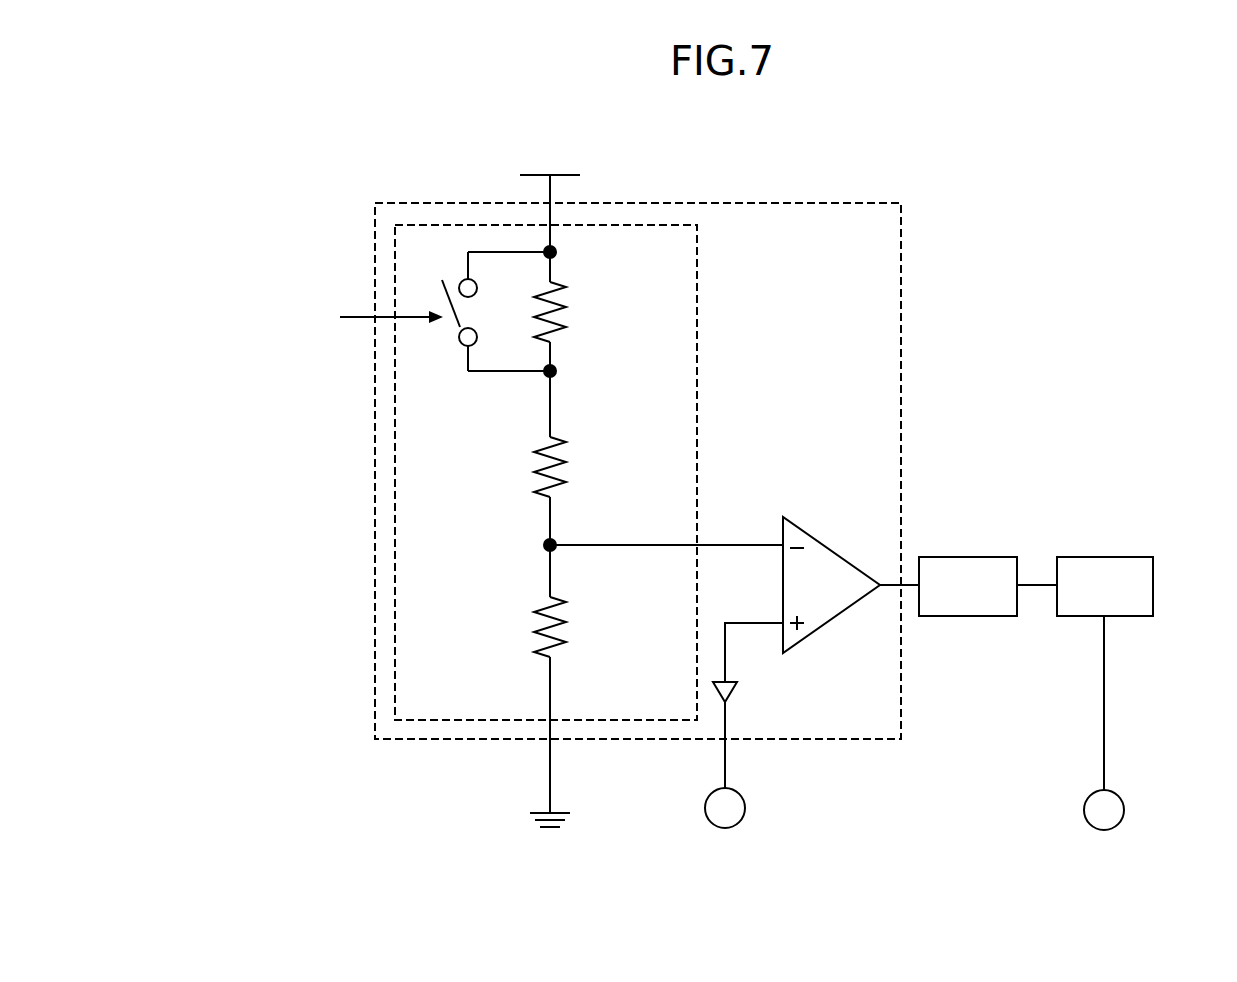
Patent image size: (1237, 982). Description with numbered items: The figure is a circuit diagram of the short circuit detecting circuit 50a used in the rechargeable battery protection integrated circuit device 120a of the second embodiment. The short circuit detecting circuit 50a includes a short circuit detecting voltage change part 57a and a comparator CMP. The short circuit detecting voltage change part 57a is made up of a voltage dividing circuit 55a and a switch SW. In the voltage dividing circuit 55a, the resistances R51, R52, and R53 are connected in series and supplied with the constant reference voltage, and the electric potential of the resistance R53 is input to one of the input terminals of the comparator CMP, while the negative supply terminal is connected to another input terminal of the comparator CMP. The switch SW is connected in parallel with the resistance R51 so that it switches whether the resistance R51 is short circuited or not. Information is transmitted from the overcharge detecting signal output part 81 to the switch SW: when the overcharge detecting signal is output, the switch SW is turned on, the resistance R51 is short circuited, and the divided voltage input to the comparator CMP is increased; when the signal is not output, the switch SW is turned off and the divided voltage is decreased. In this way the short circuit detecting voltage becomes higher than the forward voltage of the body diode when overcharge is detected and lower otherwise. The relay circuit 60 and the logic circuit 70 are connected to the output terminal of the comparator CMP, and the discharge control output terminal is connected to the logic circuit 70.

The rechargeable battery protection integrated circuit device 120a is at (1016, 242).
The short circuit detecting circuit 50a is at (901, 279).
The short circuit detecting voltage change part 57a is at (697, 298).
The voltage dividing circuit 55a is at (616, 257).
The relay circuit 60 is at (968, 557).
The logic circuit 70 is at (1105, 557).
The overcharge detecting signal output part 81 is at (356, 323).
The switch SW is at (484, 305).
The resistance R51 is at (575, 312).
The resistance R52 is at (575, 467).
The resistance R53 is at (575, 627).
The comparator CMP is at (835, 552).